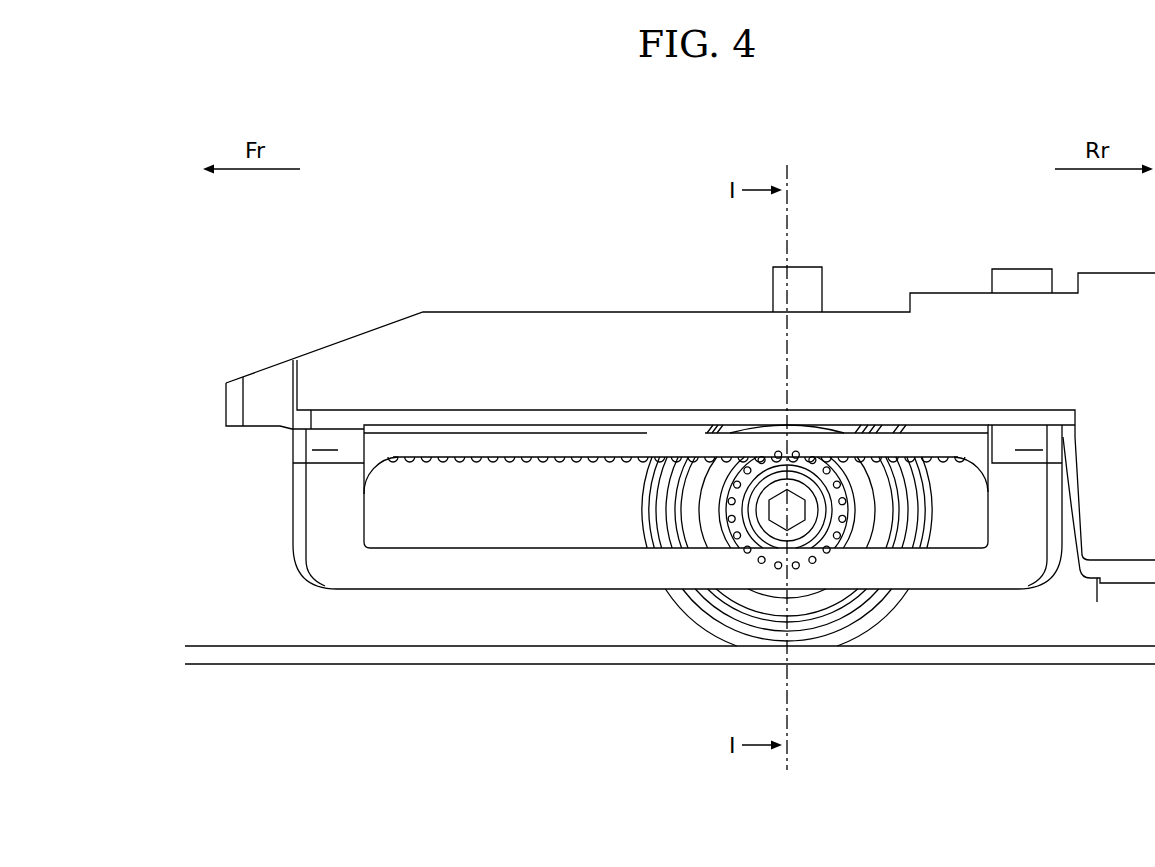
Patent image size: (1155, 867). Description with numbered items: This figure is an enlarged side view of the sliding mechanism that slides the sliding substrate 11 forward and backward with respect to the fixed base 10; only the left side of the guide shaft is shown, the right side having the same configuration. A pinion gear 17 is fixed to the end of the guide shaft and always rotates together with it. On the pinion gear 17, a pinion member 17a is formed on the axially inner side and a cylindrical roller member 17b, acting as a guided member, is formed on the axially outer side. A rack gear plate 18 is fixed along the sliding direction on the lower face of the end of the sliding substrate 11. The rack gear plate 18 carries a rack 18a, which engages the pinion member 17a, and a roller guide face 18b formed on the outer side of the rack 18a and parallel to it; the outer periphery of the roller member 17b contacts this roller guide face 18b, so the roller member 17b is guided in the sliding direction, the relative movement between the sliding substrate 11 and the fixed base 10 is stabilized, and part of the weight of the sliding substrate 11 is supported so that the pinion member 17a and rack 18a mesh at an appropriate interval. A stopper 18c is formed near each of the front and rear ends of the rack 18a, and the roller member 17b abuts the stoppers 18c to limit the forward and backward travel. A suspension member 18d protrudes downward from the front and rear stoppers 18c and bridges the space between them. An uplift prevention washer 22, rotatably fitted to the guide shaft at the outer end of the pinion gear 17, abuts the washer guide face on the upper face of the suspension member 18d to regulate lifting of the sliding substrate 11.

The fixed base 10 is at (902, 656).
The sliding substrate 11 is at (947, 300).
The pinion gear 17 is at (708, 505).
The pinion member 17a is at (726, 485).
The roller member 17b is at (828, 490).
The rack gear plate 18 is at (452, 448).
The rack 18a is at (502, 463).
The roller guide face 18b is at (549, 463).
The stopper 18c is at (364, 494).
The suspension member 18d is at (523, 576).
The uplift prevention washer 22 is at (829, 530).